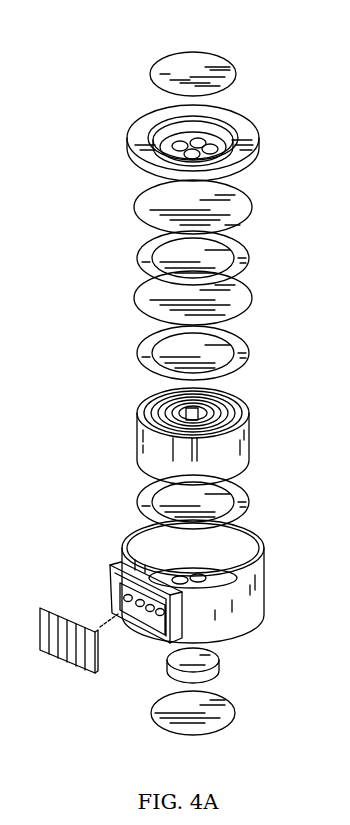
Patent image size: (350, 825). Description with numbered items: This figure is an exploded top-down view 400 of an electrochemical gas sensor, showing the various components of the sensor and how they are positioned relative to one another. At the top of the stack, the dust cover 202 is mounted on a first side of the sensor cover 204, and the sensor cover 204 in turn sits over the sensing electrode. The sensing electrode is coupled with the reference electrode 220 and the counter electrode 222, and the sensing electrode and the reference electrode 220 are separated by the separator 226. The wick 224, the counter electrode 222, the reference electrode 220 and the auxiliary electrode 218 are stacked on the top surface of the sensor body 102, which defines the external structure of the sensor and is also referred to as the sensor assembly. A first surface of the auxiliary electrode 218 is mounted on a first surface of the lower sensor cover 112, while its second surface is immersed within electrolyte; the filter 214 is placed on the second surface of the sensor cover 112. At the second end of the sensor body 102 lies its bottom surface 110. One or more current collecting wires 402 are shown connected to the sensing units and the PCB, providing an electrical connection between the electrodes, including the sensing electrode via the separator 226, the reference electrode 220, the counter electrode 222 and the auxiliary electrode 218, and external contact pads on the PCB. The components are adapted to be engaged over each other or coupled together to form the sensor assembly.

The exploded top-down view 400 is at (85, 122).
The dust cover 202 is at (215, 65).
The sensor cover 204 is at (253, 147).
The separator 226 is at (162, 293).
The reference electrode 220 is at (220, 252).
The counter electrode 222 is at (227, 350).
The wick 224 is at (140, 445).
The auxiliary electrode 218 is at (227, 502).
The current collecting wires 402 is at (138, 535).
The sensor body 102 is at (258, 600).
The filter 214 is at (220, 670).
The sensor cover 112 is at (232, 712).
The bottom surface 110 is at (73, 667).